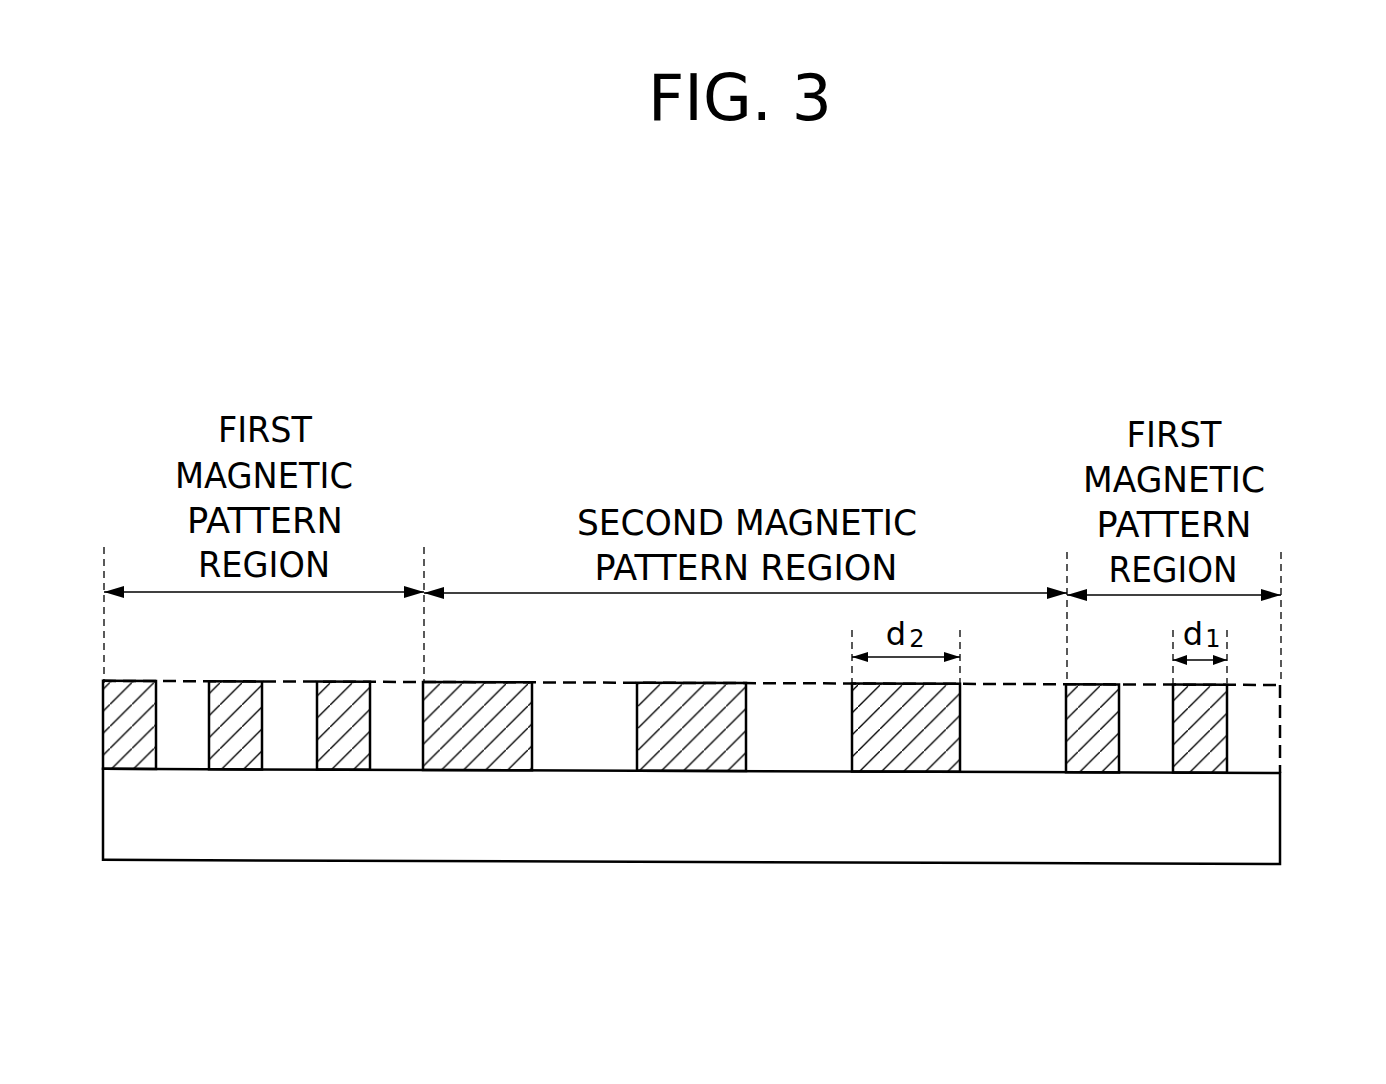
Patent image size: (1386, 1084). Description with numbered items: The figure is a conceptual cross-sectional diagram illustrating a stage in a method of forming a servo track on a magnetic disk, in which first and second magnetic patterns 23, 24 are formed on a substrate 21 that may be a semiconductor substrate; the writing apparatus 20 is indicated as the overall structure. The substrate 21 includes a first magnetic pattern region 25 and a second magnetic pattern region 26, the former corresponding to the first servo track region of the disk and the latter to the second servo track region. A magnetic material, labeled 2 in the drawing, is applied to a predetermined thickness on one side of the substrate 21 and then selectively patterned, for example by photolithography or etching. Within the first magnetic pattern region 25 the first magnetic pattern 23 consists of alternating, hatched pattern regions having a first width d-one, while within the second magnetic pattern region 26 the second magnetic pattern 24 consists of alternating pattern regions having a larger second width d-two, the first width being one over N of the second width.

The writing apparatus 20 is at (1281, 374).
The substrate 21 is at (587, 838).
The magnetic recording layer 2 is at (1271, 733).
The first magnetic pattern 23 is at (1200, 768).
The second magnetic pattern 24 is at (902, 767).
The first magnetic pattern region 25 is at (390, 587).
The second magnetic pattern region 26 is at (511, 590).